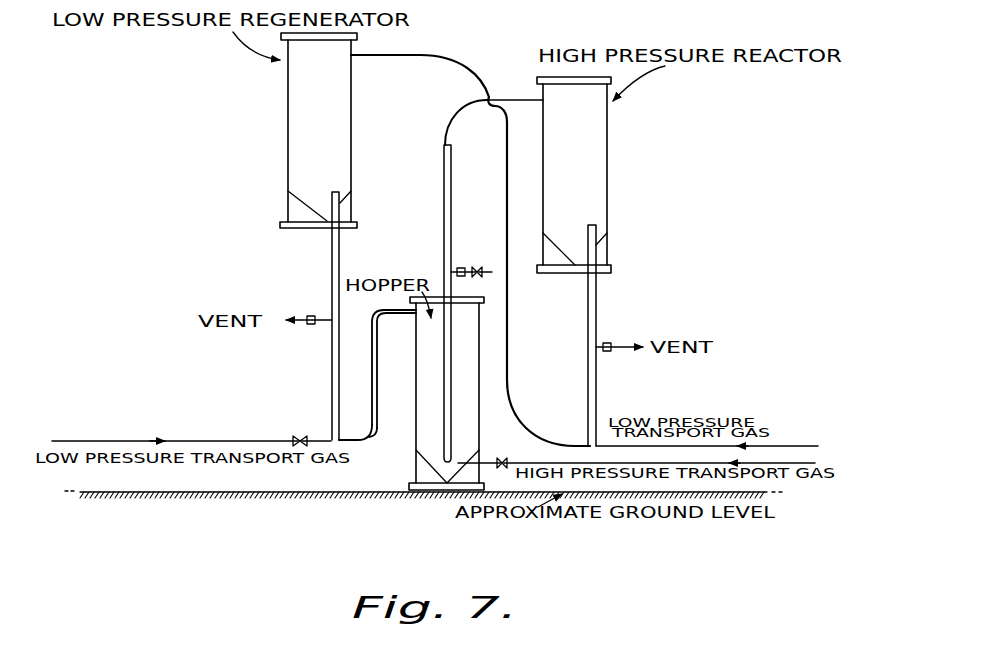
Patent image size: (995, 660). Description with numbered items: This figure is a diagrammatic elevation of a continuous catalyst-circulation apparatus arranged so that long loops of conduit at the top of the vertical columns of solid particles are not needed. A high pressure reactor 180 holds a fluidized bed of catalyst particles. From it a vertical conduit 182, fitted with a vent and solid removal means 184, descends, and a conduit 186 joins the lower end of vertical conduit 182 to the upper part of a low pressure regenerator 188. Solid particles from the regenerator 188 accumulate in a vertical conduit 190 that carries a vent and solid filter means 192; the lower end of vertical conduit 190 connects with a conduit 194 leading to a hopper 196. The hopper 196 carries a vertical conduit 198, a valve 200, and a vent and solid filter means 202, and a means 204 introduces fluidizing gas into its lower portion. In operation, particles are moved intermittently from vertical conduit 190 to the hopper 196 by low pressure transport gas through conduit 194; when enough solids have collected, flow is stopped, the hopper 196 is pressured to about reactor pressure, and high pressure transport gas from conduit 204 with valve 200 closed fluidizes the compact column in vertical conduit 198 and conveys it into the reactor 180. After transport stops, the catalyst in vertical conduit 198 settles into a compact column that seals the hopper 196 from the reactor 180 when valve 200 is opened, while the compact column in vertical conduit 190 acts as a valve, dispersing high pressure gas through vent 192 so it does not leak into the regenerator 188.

The high pressure reactor 180 is at (602, 128).
The vertical conduit 182 is at (597, 384).
The vent and solid removal means 184 is at (610, 346).
The conduit 186 is at (538, 441).
The low pressure regenerator 188 is at (289, 116).
The vertical conduit 190 is at (332, 255).
The vent and solid filter means 192 is at (309, 325).
The conduit 194 is at (374, 434).
The hopper 196 is at (417, 372).
The vertical conduit 198 is at (445, 205).
The valve 200 is at (478, 267).
The vent and solid filter means 202 is at (456, 270).
The means for introducing fluidizing gas 204 is at (496, 464).